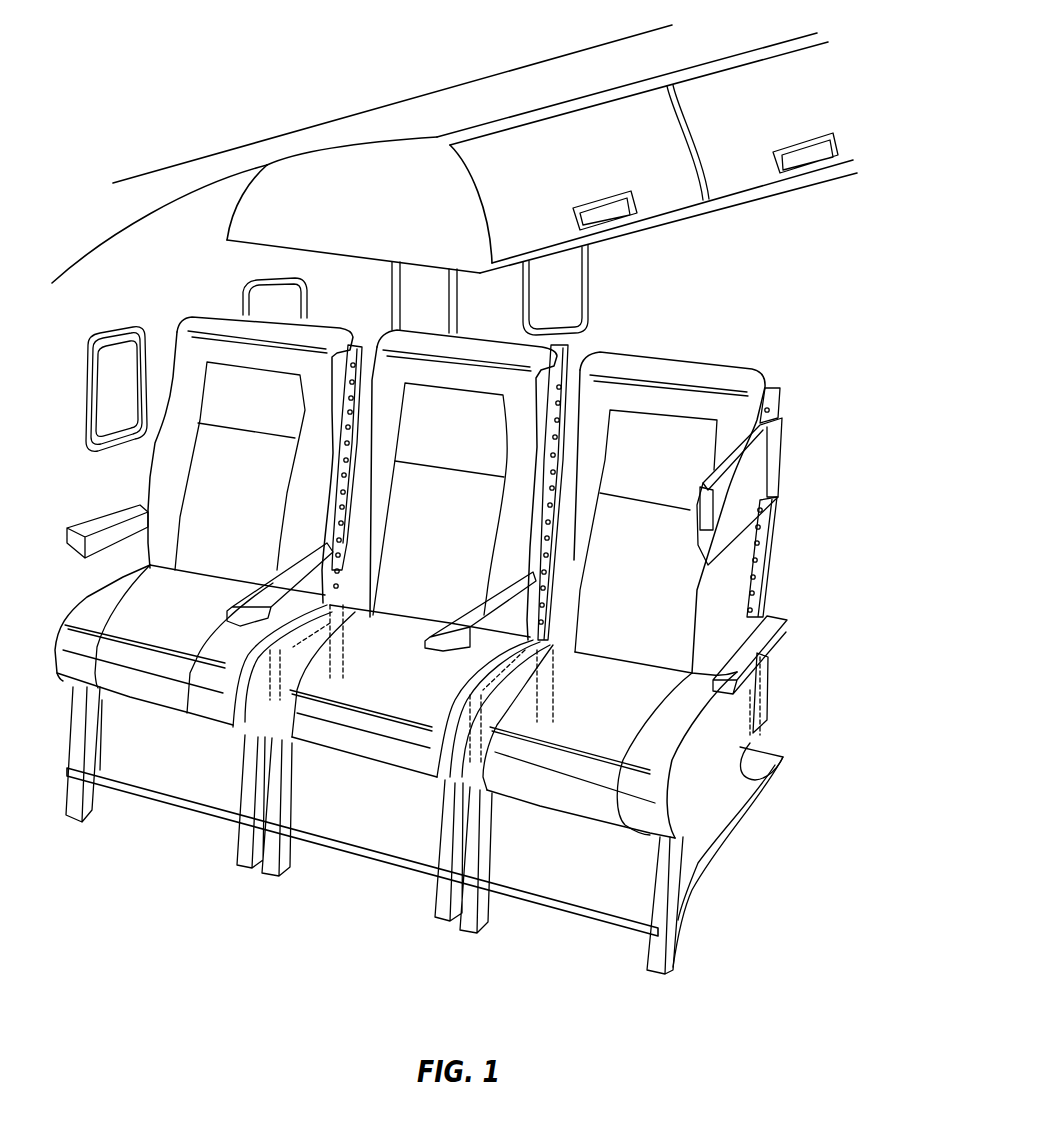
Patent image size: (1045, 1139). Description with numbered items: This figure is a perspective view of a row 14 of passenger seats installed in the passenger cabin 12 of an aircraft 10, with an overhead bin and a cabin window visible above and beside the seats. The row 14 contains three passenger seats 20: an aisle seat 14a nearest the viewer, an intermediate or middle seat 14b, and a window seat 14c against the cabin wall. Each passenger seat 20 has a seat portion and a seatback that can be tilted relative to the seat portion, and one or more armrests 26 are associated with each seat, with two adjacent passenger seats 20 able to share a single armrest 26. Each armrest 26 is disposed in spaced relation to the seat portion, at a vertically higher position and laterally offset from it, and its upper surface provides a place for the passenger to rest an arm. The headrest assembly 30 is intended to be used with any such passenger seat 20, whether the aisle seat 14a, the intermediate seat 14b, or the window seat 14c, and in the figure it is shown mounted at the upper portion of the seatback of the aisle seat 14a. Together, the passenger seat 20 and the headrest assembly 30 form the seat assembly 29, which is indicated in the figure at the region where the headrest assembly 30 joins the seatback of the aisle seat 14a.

The aircraft 10 is at (373, 110).
The passenger cabin 12 is at (805, 267).
The row of seats 14 is at (786, 692).
The aisle seat 14a is at (698, 564).
The intermediate seat 14b is at (478, 336).
The window seat 14c is at (215, 312).
The passenger seat 20 is at (714, 375).
The armrest 26 is at (767, 633).
The seat assembly 29 is at (829, 370).
The headrest assembly 30 is at (787, 462).